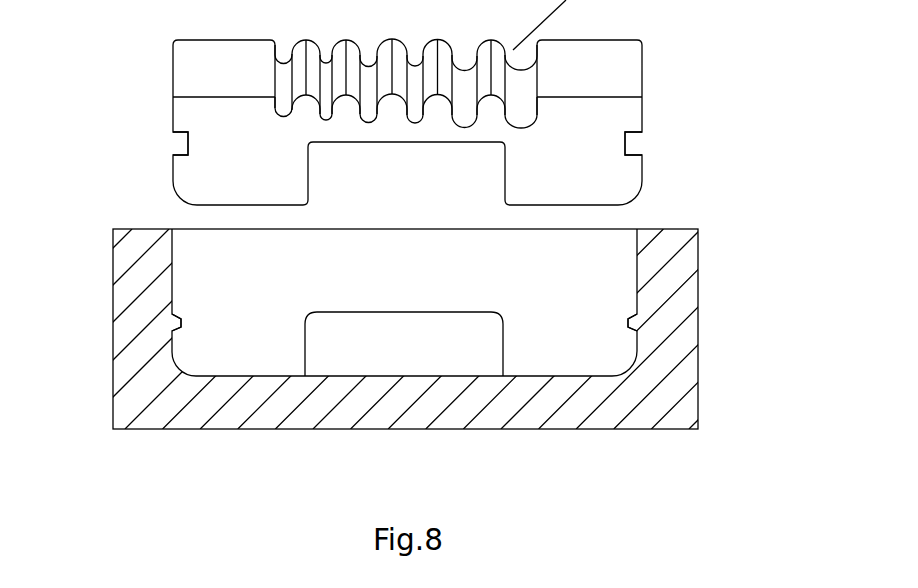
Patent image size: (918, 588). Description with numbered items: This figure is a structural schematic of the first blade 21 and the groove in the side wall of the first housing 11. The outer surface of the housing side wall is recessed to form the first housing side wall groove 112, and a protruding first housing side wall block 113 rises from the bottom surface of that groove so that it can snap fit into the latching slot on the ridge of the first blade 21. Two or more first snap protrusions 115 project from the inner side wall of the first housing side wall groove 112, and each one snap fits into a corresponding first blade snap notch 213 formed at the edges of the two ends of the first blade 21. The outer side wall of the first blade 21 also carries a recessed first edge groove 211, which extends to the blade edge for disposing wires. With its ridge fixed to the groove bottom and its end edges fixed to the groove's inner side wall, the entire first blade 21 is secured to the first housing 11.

The first housing 11 is at (444, 331).
The first housing side wall groove 112 is at (585, 350).
The first housing side wall block 113 is at (478, 365).
The first snap protrusion 115 is at (182, 323).
The first blade 21 is at (420, 102).
The first edge groove 211 is at (523, 88).
The first blade snap notch 213 is at (177, 143).